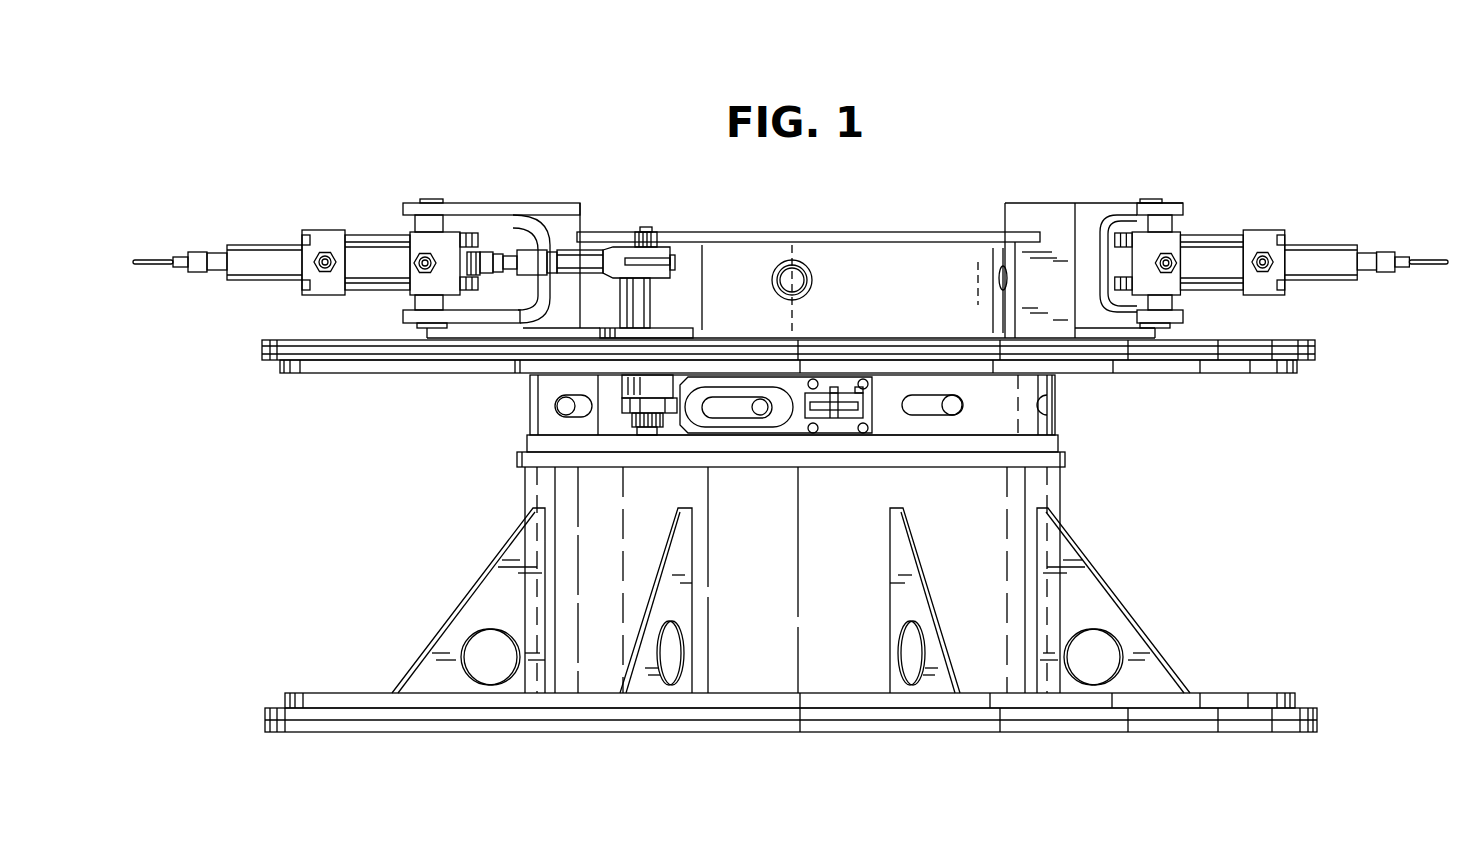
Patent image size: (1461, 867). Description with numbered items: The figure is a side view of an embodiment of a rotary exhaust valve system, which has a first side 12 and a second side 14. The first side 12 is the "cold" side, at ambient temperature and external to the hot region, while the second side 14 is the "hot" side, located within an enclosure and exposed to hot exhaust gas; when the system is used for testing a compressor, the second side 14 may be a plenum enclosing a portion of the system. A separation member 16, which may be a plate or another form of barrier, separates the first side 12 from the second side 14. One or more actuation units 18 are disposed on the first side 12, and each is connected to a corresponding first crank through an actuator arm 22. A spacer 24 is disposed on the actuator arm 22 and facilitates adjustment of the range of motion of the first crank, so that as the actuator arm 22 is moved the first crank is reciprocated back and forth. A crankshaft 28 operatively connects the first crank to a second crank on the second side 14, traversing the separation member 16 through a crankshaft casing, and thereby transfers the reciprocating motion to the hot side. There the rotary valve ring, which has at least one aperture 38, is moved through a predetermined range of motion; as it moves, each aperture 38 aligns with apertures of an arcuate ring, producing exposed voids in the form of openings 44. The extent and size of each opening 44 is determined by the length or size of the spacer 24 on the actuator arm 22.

The first side 12 is at (1032, 151).
The second side 14 is at (1208, 430).
The separation member 16 is at (1304, 340).
The actuation unit 18 is at (284, 174).
The actuator arm 22 is at (612, 257).
The spacer 24 is at (533, 258).
The crankshaft 28 is at (643, 228).
The aperture 38 is at (720, 407).
The opening 44 is at (570, 405).